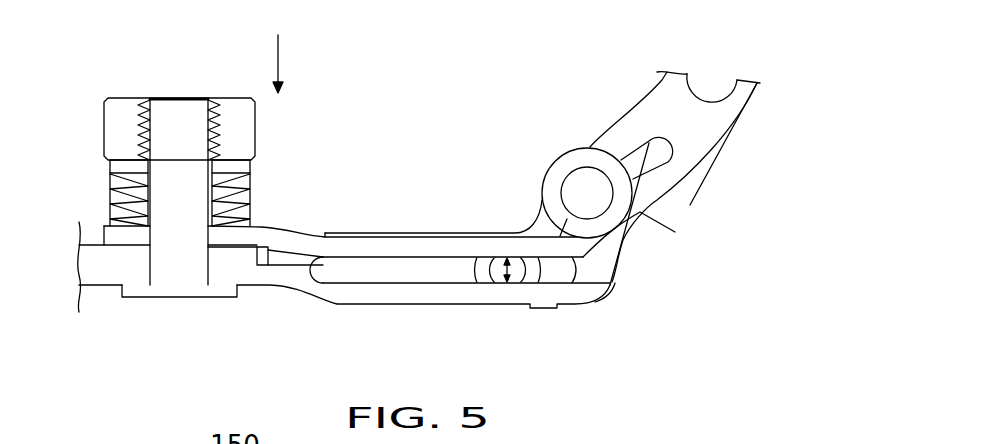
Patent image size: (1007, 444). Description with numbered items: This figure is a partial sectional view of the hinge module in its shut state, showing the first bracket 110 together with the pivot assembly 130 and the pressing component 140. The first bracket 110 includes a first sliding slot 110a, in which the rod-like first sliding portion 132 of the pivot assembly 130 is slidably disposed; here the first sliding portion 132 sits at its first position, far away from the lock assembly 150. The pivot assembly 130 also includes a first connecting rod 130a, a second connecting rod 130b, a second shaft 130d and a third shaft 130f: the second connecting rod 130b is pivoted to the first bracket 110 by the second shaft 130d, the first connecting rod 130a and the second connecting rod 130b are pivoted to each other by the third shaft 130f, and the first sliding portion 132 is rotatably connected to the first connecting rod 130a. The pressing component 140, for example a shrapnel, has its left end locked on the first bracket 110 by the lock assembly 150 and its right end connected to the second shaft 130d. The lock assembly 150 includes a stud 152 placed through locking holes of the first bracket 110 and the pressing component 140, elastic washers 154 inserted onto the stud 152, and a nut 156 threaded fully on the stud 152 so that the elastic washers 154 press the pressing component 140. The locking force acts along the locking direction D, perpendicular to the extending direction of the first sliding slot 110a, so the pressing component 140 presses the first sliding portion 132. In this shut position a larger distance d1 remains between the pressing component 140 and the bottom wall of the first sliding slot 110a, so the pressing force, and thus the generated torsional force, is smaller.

The first bracket 110 is at (107, 277).
The first sliding slot 110a is at (390, 287).
The pivot assembly 130 is at (779, 110).
The first connecting rod 130a is at (668, 218).
The second connecting rod 130b is at (700, 127).
The second shaft 130d is at (593, 200).
The third shaft 130f is at (717, 80).
The first sliding portion 132 is at (522, 270).
The pressing component 140 is at (428, 247).
The lock assembly 150 is at (176, 80).
The stud 152 is at (182, 280).
The elastic washers 154 is at (117, 186).
The nut 156 is at (117, 122).
The distance d1 is at (505, 270).
The locking direction D is at (280, 63).